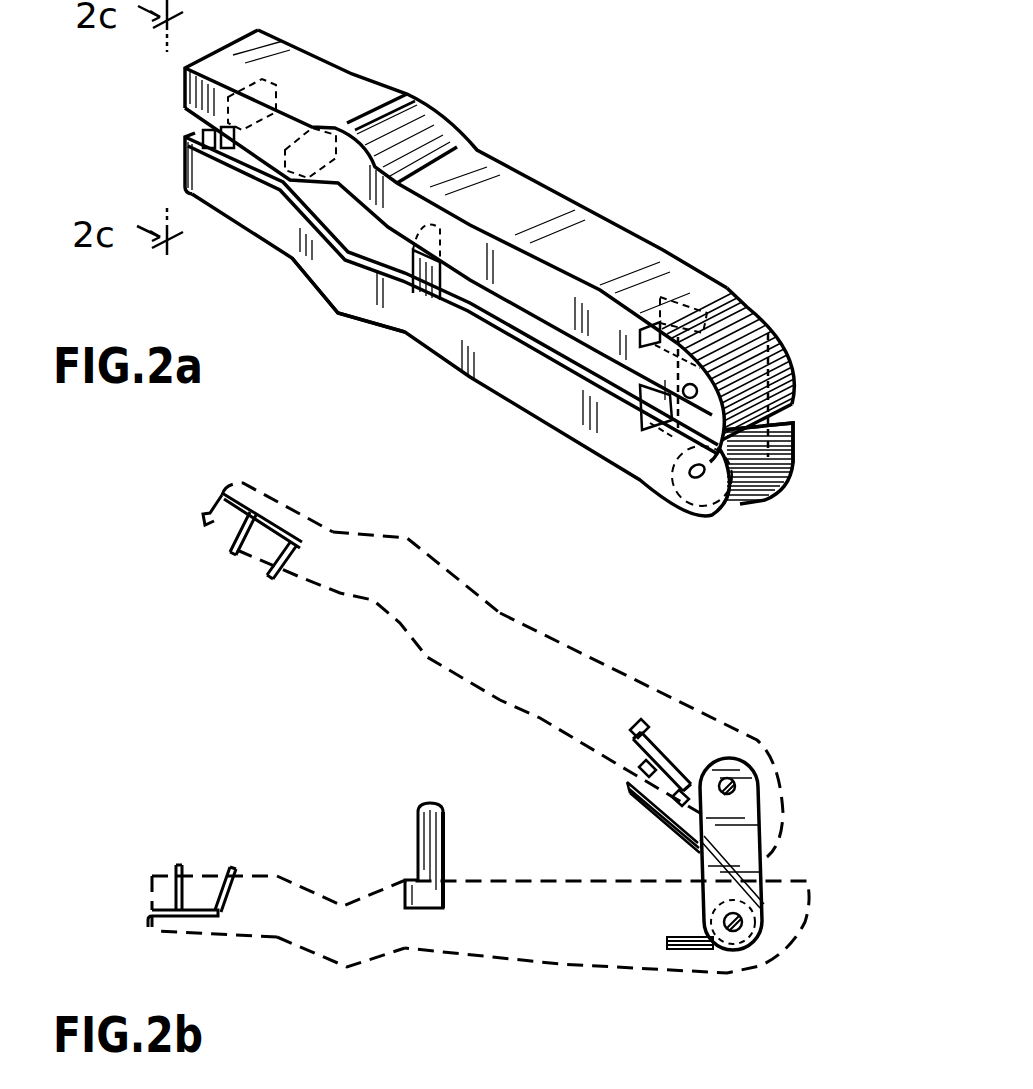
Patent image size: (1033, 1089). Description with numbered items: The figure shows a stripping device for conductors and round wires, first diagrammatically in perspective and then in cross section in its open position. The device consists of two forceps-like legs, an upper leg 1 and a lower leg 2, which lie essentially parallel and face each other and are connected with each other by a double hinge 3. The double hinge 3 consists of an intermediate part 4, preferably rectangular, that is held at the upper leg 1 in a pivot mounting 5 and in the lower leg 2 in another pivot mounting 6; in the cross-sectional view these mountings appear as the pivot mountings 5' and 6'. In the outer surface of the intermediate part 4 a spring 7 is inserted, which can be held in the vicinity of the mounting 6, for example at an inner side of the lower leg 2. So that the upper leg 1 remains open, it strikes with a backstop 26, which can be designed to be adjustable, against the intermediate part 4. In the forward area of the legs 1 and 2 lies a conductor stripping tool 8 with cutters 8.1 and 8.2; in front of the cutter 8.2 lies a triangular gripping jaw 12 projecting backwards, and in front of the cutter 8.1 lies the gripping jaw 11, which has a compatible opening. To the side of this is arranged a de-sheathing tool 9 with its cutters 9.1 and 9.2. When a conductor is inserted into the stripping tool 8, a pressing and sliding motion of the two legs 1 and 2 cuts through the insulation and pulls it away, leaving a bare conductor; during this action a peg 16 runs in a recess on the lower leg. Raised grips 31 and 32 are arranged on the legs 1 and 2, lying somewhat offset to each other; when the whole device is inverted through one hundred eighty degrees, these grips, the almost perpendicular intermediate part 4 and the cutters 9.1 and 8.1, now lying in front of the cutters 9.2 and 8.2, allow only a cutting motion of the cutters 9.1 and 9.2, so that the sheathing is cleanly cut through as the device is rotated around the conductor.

In FIG. 2a, the upper leg 1 is at (430, 135).
In FIG. 2a, the lower leg 2 is at (492, 378).
In FIG. 2b, the lower leg 2 is at (537, 960).
In FIG. 2a, the double hinge 3 is at (786, 411).
In FIG. 2a, the intermediate part 4 is at (757, 414).
In FIG. 2b, the intermediate part 4 is at (747, 817).
In FIG. 2a, the pivot mounting 5 is at (687, 395).
In FIG. 2a, the pivot mounting 6 is at (682, 476).
In FIG. 2a, the spring 7 is at (641, 413).
In FIG. 2b, the spring 7 is at (628, 790).
In FIG. 2a, the conductor stripping tool 8 is at (187, 113).
In FIG. 2a, the de-sheathing tool 9 is at (203, 133).
In FIG. 2b, the cutter 8.1 is at (230, 550).
In FIG. 2b, the cutter 9.1 is at (268, 574).
In FIG. 2b, the cutter 8.2 is at (175, 866).
In FIG. 2b, the cutter 9.2 is at (232, 868).
In FIG. 2b, the gripping jaw 11 is at (218, 513).
In FIG. 2b, the triangular gripping jaw 12 is at (152, 900).
In FIG. 2a, the peg 16 is at (422, 229).
In FIG. 2b, the peg 16 is at (443, 817).
In FIG. 2a, the backstop 26 is at (650, 312).
In FIG. 2b, the backstop 26 is at (647, 730).
In FIG. 2a, the raised grip 31 is at (388, 70).
In FIG. 2b, the raised grip 31 is at (413, 540).
In FIG. 2a, the raised grip 32 is at (340, 314).
In FIG. 2b, the raised grip 32 is at (353, 967).
In FIG. 2b, the pivot pin 5' is at (712, 761).
In FIG. 2b, the pivot pin 6' is at (709, 924).